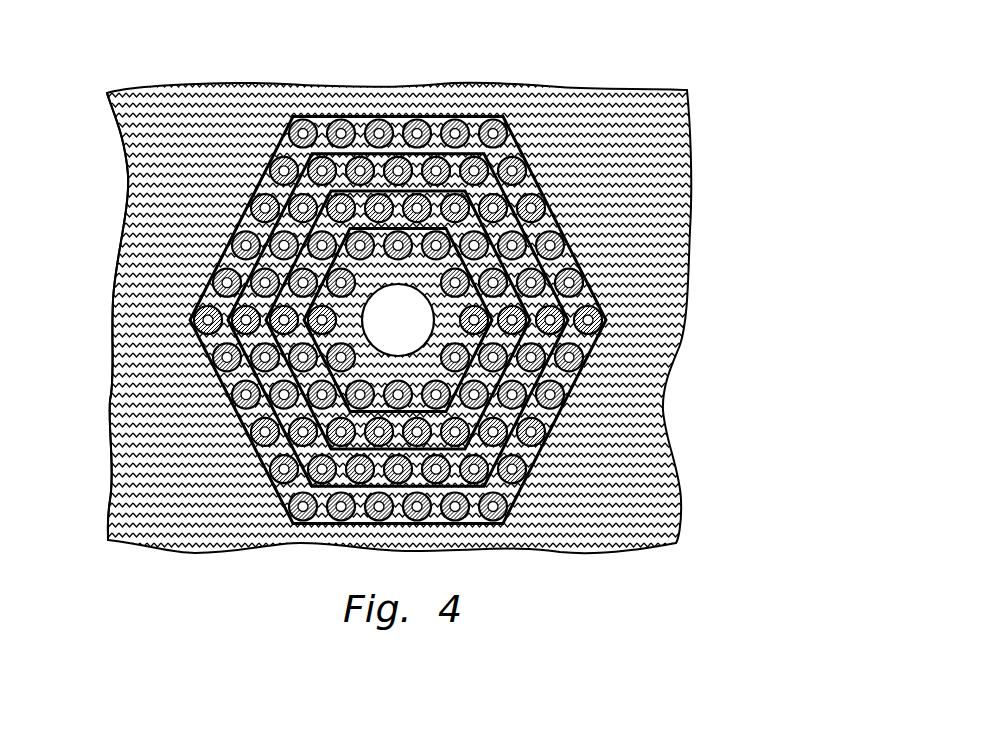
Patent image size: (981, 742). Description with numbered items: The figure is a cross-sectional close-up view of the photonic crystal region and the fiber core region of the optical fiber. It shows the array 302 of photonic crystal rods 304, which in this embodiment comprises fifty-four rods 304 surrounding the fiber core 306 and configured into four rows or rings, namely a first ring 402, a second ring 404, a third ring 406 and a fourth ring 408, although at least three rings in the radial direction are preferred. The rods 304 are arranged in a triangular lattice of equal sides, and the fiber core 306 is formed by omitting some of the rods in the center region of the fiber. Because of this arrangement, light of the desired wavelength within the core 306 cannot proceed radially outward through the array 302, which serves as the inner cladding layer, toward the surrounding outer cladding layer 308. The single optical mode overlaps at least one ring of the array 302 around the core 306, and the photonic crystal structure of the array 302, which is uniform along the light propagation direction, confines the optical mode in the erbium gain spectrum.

The array 302 is at (222, 215).
The photonic crystal rods 304 is at (380, 120).
The fiber core 306 is at (418, 331).
The outer cladding layer 308 is at (603, 427).
The first ring 402 is at (522, 287).
The second ring 404 is at (520, 237).
The third ring 406 is at (512, 187).
The fourth ring 408 is at (522, 134).